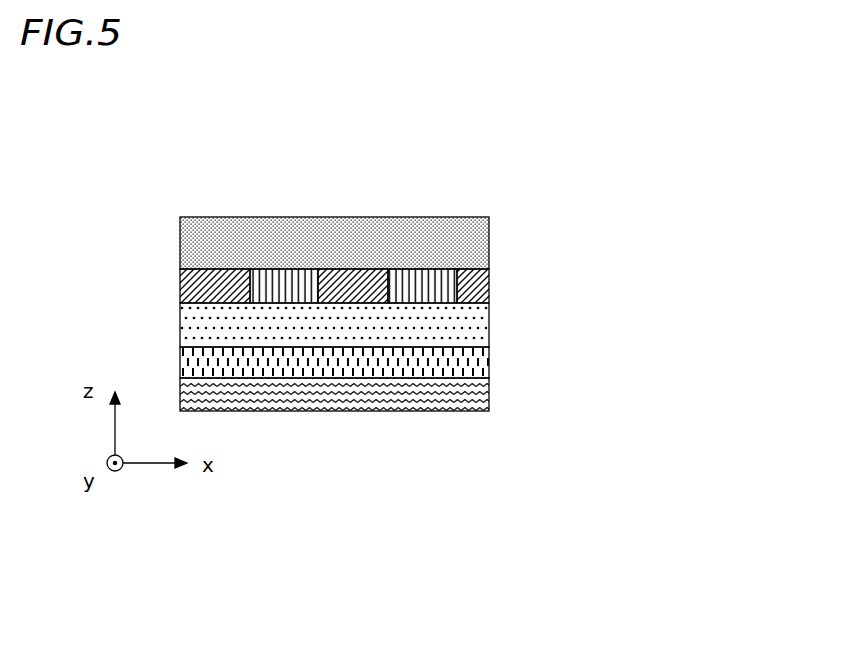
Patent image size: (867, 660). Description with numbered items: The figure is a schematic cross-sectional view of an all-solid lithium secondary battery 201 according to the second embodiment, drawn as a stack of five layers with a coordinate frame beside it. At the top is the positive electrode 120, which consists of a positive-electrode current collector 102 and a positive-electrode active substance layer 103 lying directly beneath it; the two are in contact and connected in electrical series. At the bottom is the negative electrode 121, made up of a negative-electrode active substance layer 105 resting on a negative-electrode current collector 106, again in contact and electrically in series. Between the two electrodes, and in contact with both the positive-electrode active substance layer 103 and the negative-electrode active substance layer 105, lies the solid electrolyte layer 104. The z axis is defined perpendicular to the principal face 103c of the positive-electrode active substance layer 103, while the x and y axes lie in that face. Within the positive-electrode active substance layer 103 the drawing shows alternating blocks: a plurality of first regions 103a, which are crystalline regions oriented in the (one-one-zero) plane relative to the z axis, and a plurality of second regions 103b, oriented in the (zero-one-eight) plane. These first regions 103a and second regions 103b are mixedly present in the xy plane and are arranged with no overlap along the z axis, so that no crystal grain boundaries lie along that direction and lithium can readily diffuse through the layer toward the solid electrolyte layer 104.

The positive-electrode current collector 102 is at (441, 239).
The positive-electrode active substance layer 103 is at (390, 205).
The first regions 103a is at (378, 275).
The second regions 103b is at (280, 283).
The principal face 103c is at (203, 263).
The solid electrolyte layer 104 is at (440, 325).
The negative-electrode active substance layer 105 is at (444, 364).
The negative-electrode current collector 106 is at (447, 395).
The positive electrode 120 is at (437, 205).
The negative electrode 121 is at (439, 392).
The all-solid lithium secondary battery 201 is at (500, 272).